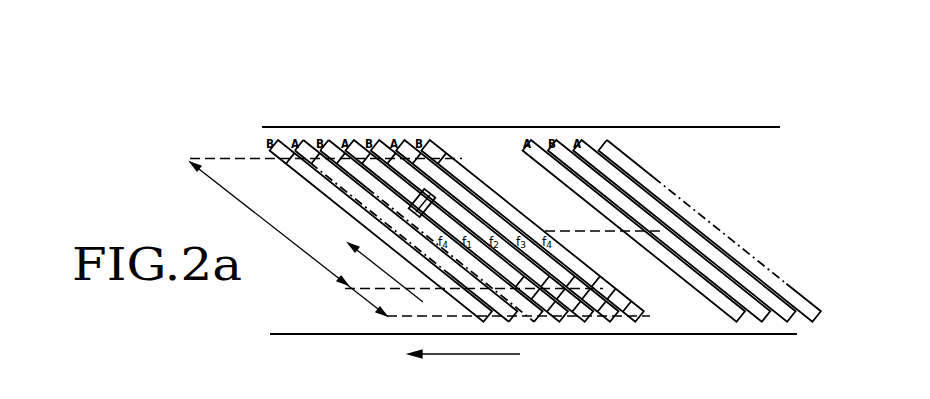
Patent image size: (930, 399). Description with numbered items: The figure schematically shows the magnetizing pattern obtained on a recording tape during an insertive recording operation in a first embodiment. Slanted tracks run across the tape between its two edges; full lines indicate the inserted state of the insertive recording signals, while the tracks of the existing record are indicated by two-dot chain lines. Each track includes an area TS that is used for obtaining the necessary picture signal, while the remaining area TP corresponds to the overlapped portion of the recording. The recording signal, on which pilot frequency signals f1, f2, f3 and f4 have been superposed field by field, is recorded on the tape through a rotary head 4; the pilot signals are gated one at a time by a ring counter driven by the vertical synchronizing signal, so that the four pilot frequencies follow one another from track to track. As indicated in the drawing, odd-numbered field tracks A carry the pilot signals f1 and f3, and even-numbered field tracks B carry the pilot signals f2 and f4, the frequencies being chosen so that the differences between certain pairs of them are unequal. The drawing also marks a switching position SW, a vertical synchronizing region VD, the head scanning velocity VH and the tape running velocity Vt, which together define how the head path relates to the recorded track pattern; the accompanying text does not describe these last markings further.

The rotary head 4 is at (414, 195).
The area for obtaining a necessary picture signal TS is at (245, 205).
The overlapped portion area TP is at (364, 296).
The head switching point SW is at (418, 163).
The vertical sync signal region VD is at (585, 290).
The head scanning velocity VH is at (385, 272).
The tape running velocity Vt is at (464, 365).
The pilot frequency signal f1 is at (577, 316).
The pilot frequency signal f2 is at (604, 316).
The pilot frequency signal f3 is at (632, 316).
The pilot frequency signal f4 is at (550, 316).